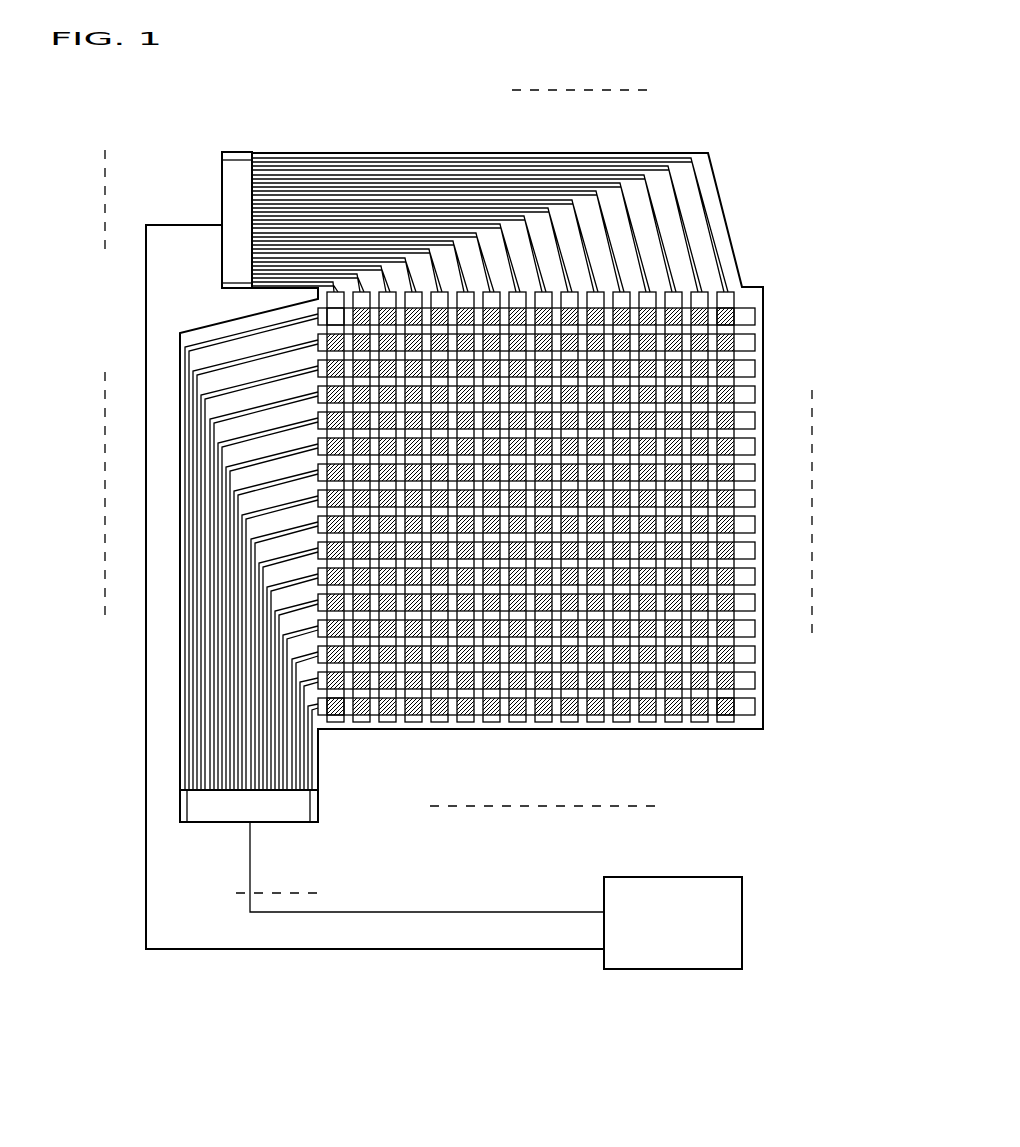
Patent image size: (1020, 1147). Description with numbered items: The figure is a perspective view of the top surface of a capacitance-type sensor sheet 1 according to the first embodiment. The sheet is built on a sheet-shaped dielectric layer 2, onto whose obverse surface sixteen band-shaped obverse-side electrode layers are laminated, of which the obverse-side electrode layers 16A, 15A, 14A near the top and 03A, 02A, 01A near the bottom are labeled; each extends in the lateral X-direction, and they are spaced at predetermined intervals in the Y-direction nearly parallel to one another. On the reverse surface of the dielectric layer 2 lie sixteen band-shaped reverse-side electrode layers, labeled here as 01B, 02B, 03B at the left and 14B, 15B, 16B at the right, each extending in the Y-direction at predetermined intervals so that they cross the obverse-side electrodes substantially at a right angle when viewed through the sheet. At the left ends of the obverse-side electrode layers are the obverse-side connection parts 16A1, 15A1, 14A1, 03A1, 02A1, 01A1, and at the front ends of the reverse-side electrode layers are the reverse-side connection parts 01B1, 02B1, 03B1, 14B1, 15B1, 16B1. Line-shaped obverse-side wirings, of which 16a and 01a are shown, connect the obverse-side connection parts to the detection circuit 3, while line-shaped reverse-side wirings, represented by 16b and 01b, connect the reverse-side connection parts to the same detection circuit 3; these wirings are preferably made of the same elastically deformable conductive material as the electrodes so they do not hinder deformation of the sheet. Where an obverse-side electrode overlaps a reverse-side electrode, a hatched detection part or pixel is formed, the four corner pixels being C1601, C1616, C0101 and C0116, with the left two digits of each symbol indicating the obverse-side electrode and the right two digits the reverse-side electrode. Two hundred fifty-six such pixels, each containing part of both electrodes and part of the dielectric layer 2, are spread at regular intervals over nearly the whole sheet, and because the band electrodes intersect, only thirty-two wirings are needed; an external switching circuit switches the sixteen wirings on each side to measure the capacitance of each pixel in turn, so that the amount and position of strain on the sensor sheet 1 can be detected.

The capacitance-type sensor sheet 1 is at (836, 501).
The dielectric layer 2 is at (530, 722).
The detection circuit 3 is at (728, 915).
The reverse-side electrode layer 01B is at (335, 722).
The reverse-side electrode layer 02B is at (361, 722).
The reverse-side electrode layer 03B is at (387, 722).
The reverse-side electrode layer 14B is at (673, 722).
The reverse-side electrode layer 15B is at (699, 722).
The reverse-side electrode layer 16B is at (725, 722).
The obverse-side electrode layer 16A is at (742, 316).
The obverse-side electrode layer 15A is at (742, 343).
The obverse-side electrode layer 14A is at (742, 370).
The obverse-side electrode layer 03A is at (742, 653).
The obverse-side electrode layer 02A is at (742, 680).
The obverse-side electrode layer 01A is at (742, 706).
The reverse-side connection part 01B1 is at (337, 290).
The reverse-side connection part 02B1 is at (363, 290).
The reverse-side connection part 03B1 is at (389, 290).
The reverse-side connection part 14B1 is at (677, 290).
The reverse-side connection part 15B1 is at (701, 292).
The reverse-side connection part 16B1 is at (727, 292).
The obverse-side connection part 16A1 is at (318, 316).
The obverse-side connection part 15A1 is at (318, 342).
The obverse-side connection part 14A1 is at (318, 368).
The obverse-side connection part 03A1 is at (318, 654).
The obverse-side connection part 02A1 is at (318, 680).
The obverse-side connection part 01A1 is at (318, 706).
The reverse-side wiring 16b is at (252, 160).
The reverse-side wiring 01b is at (252, 283).
The obverse-side wiring 16a is at (188, 797).
The obverse-side wiring 01a is at (315, 800).
The detection part C1601 is at (325, 310).
The detection part C1616 is at (737, 318).
The detection part C0101 is at (323, 713).
The detection part C0116 is at (735, 715).